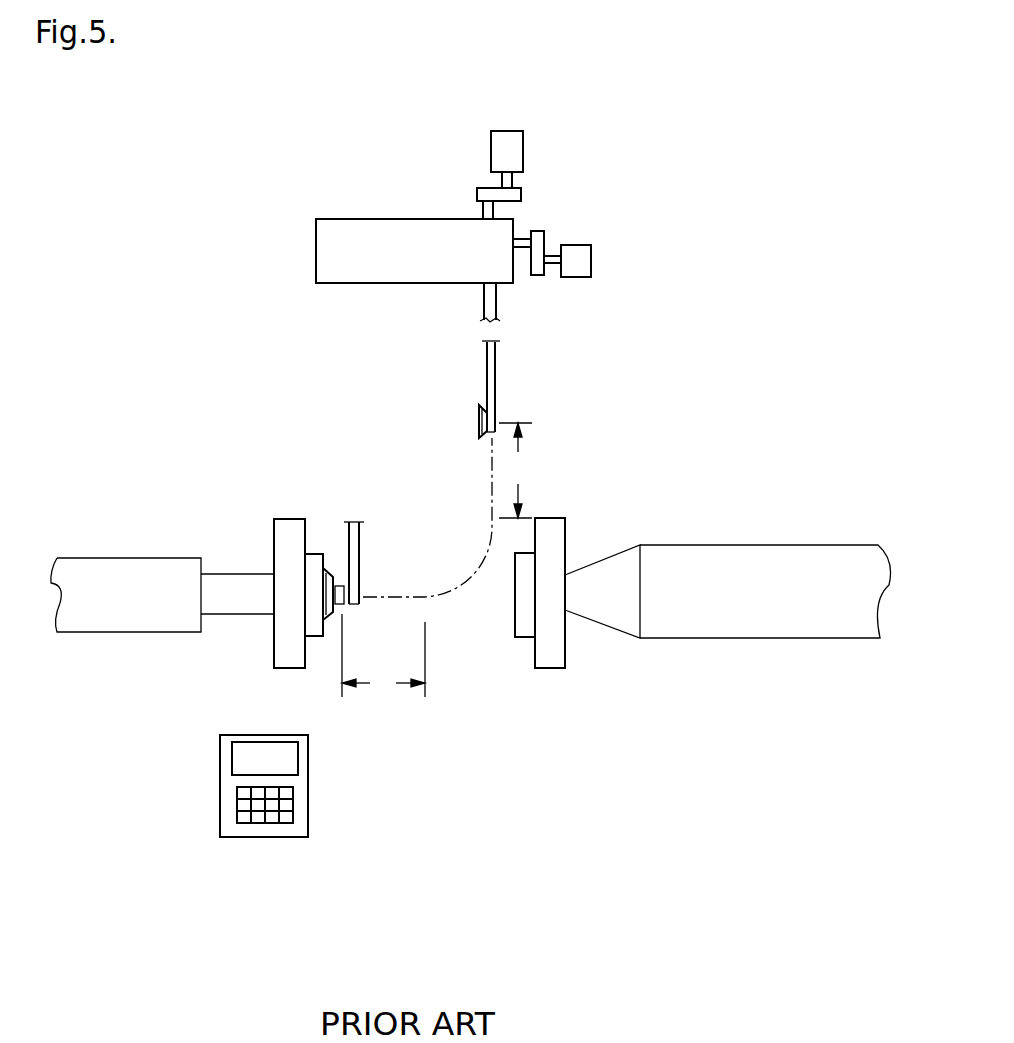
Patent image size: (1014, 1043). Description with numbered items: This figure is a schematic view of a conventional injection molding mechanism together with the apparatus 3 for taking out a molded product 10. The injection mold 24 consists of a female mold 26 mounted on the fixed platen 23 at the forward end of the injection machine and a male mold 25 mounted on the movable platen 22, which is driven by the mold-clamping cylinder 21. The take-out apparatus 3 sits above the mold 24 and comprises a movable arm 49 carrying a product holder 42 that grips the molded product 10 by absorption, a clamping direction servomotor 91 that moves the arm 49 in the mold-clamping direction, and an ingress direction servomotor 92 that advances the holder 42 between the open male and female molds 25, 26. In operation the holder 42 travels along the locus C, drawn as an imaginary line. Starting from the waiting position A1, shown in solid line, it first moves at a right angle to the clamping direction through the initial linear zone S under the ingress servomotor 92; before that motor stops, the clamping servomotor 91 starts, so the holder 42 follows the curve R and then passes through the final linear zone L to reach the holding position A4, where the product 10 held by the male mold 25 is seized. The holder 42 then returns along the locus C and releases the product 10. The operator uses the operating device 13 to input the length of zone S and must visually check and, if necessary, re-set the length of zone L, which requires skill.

The apparatus for taking out an injection-molded product 3 is at (518, 245).
The clamping direction servomotor 91 is at (508, 154).
The ingress direction servomotor 92 is at (608, 261).
The movable arm 49 is at (493, 362).
The product holder 42 is at (477, 413).
The molded product 10 is at (333, 592).
The mold-clamping cylinder 21 is at (168, 558).
The movable platen 22 is at (285, 653).
The fixed platen 23 is at (555, 657).
The injection mold 24 is at (420, 688).
The male mold 25 is at (318, 636).
The female mold 26 is at (525, 628).
The operating device 13 is at (222, 795).
The waiting position A1 is at (533, 424).
The holding position A4 is at (365, 628).
The initial linear zone S is at (515, 470).
The final linear zone L is at (383, 656).
The locus C is at (406, 593).
The curve R is at (465, 608).